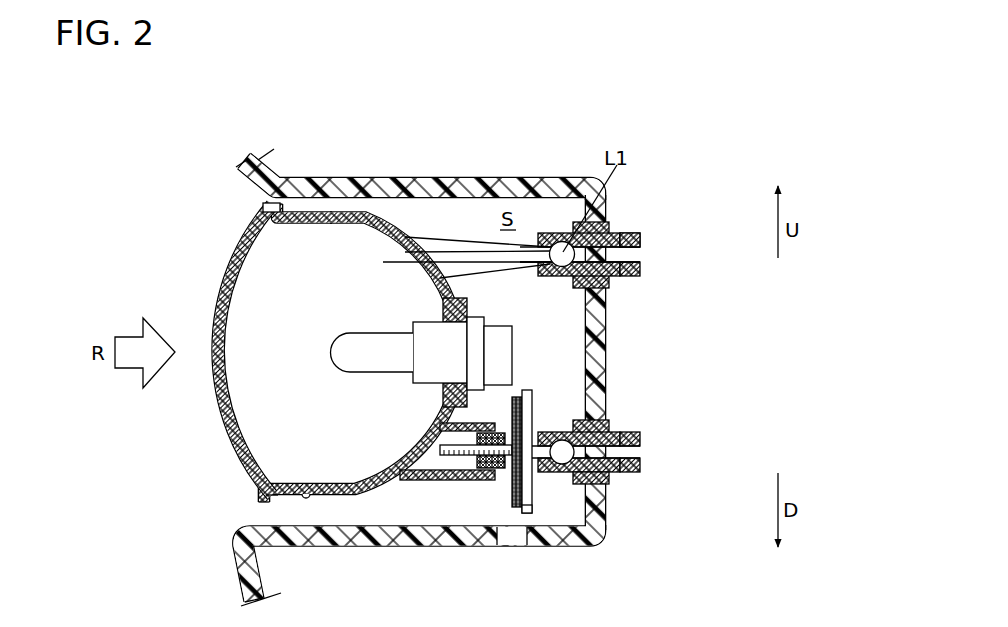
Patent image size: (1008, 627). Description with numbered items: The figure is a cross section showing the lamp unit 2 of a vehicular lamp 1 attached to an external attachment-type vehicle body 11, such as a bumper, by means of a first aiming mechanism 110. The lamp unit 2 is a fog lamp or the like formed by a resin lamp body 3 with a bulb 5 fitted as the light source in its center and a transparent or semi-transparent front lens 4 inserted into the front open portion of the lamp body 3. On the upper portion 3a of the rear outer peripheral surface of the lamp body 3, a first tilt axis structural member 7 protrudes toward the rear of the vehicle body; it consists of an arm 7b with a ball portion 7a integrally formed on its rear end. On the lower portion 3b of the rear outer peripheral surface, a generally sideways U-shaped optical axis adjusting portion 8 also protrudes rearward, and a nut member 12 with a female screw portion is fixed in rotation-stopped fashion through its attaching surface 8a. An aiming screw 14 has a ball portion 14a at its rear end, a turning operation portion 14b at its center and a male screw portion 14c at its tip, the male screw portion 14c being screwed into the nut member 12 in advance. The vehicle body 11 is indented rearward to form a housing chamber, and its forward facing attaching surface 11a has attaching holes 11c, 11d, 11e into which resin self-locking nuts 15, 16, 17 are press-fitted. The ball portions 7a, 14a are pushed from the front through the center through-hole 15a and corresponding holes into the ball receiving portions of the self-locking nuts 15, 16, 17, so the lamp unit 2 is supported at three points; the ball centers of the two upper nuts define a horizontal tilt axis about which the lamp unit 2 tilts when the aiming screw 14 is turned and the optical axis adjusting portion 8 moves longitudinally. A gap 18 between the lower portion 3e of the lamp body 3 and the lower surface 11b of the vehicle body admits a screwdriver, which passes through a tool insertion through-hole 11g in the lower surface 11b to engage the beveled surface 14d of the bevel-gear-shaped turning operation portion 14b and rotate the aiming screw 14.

The vehicular lamp 1 is at (146, 203).
The lamp unit 2 is at (307, 104).
The lamp body 3 is at (320, 212).
The upper portion of rear outer peripheral surface 3a is at (393, 212).
The lower portion of rear outer peripheral surface 3b is at (355, 495).
The lower portion of lamp body 3e is at (303, 493).
The front lens 4 is at (247, 242).
The bulb 5 is at (373, 345).
The first tilt axis structural member 7 is at (573, 136).
The ball portion 7a is at (563, 247).
The arm 7b is at (446, 242).
The optical axis adjusting portion 8 is at (410, 484).
The attaching surface 8a is at (498, 432).
The vehicle body 11 is at (612, 325).
The attaching surface 11a is at (582, 300).
The lower surface 11b is at (557, 521).
The attaching hole 11c is at (605, 235).
The attaching hole 11d is at (591, 255).
The attaching hole 11e is at (605, 430).
The tool insertion through-hole 11g is at (512, 528).
The nut member 12 is at (509, 456).
The aiming screw 14 is at (586, 452).
The ball portion 14a is at (602, 474).
The turning operation portion 14b is at (533, 407).
The male screw portion 14c is at (456, 443).
The beveled surface 14d is at (521, 524).
The self-locking nut 15 is at (643, 270).
The center through-hole 15a is at (632, 255).
The self-locking nut 16 is at (630, 240).
The self-locking nut 17 is at (645, 437).
The gap 18 is at (252, 512).
The first aiming mechanism 110 is at (569, 212).